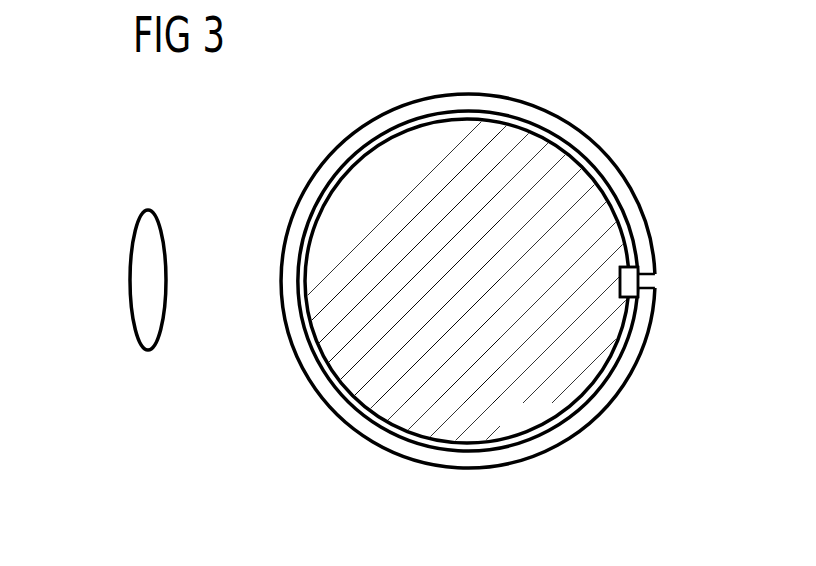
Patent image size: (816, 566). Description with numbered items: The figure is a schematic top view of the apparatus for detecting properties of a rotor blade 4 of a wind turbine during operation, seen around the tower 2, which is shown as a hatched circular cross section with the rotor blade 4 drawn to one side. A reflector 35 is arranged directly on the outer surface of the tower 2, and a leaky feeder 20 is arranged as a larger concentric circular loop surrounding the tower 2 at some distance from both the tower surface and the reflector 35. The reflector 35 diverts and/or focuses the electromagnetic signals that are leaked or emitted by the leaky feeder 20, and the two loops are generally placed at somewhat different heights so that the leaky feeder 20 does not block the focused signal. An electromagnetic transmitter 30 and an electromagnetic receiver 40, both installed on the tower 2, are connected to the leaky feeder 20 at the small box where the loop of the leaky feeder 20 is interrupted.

The tower 2 is at (467, 128).
The rotor blade 4 is at (148, 212).
The leaky feeder 20 is at (612, 165).
The electromagnetic transmitter 30 is at (627, 280).
The electromagnetic receiver 40 is at (629, 282).
The reflector 35 is at (468, 445).